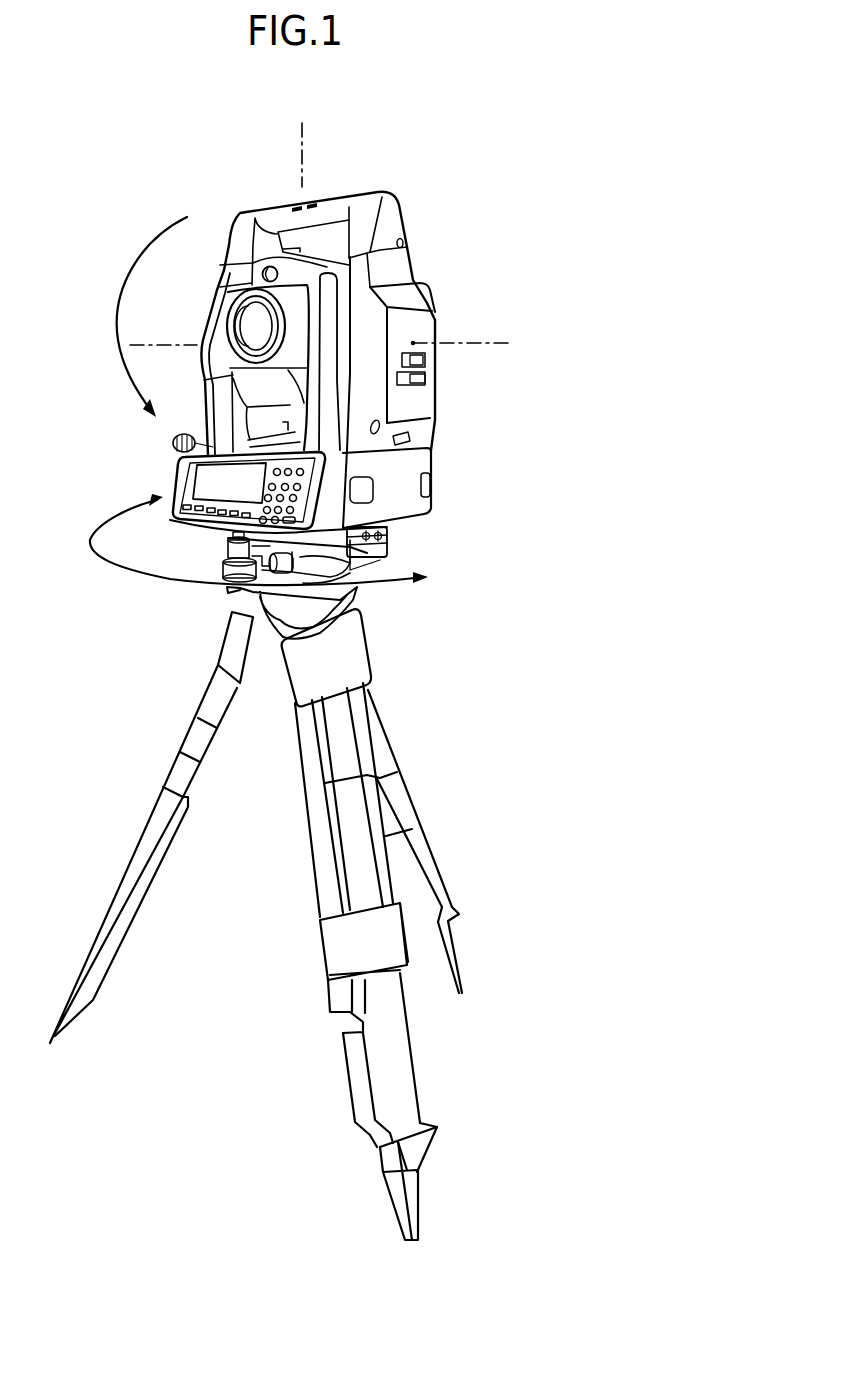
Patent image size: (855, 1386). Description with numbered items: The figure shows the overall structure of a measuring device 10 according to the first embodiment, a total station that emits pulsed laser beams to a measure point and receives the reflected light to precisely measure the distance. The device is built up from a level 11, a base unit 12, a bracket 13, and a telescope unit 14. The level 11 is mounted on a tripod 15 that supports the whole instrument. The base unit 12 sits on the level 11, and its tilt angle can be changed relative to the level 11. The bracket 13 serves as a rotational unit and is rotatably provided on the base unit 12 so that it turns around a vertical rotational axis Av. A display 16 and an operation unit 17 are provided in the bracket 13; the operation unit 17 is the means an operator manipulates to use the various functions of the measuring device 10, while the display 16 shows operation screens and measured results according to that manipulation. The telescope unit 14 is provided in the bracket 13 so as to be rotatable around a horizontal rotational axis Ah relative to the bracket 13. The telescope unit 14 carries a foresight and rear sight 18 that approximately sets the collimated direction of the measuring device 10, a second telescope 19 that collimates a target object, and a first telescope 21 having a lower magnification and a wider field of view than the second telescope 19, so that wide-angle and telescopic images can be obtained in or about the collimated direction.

The measuring device 10 is at (478, 150).
The level 11 is at (238, 604).
The base unit 12 is at (403, 542).
The bracket 13 is at (449, 308).
The telescope unit 14 is at (237, 393).
The tripod 15 is at (452, 805).
The display 16 is at (223, 485).
The operation unit 17 is at (215, 500).
The foresight and rear sight 18 is at (320, 253).
The second telescope 19 is at (248, 325).
The first telescope 21 is at (262, 275).
The vertical rotational axis Av is at (300, 168).
The horizontal rotational axis Ah is at (512, 343).